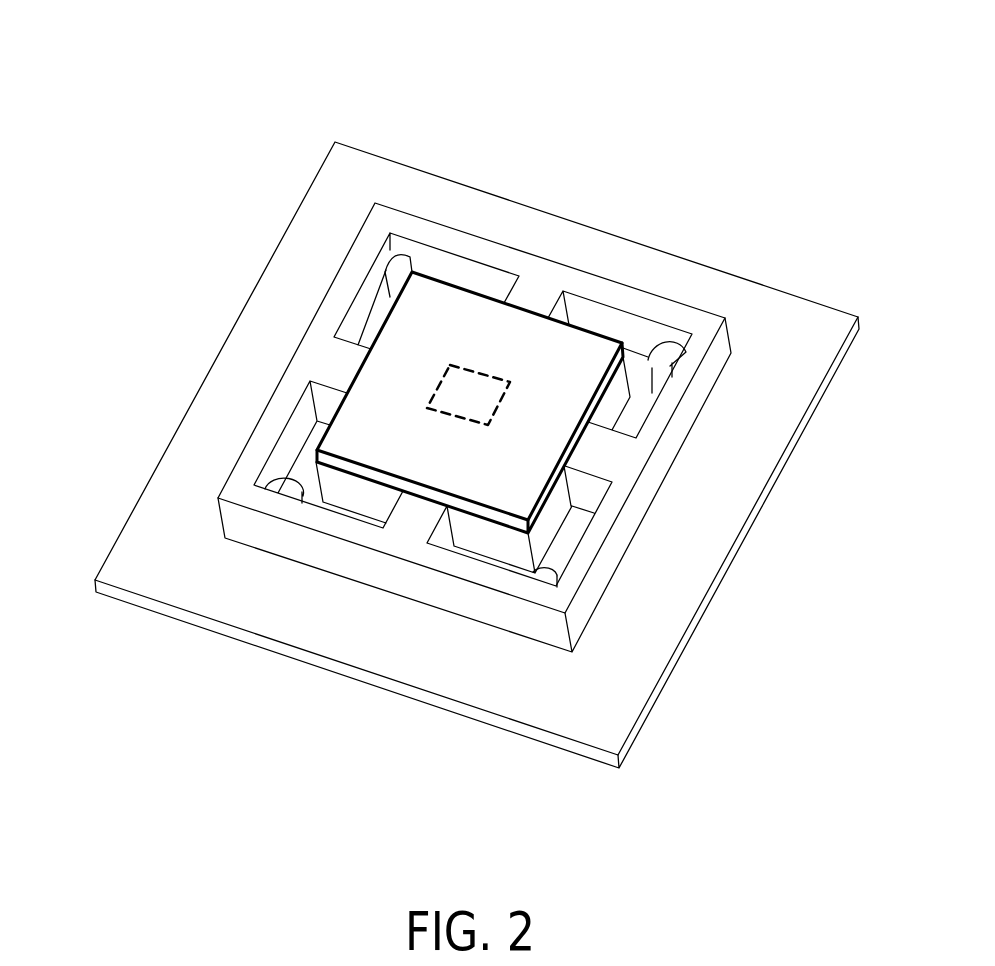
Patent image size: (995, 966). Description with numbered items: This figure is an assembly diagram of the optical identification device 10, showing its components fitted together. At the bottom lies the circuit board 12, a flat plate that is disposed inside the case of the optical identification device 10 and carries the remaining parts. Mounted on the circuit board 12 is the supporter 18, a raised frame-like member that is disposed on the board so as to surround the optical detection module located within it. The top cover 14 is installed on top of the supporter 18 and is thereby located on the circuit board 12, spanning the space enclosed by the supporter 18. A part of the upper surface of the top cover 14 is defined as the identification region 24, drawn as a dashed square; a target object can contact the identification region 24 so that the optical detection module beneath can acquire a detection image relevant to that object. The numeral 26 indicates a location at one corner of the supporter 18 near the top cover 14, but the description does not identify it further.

The optical identification device 10 is at (683, 98).
The circuit board 12 is at (185, 521).
The top cover 14 is at (382, 377).
The supporter 18 is at (322, 331).
The identification region 24 is at (490, 380).
The cavity corner 26 is at (626, 312).